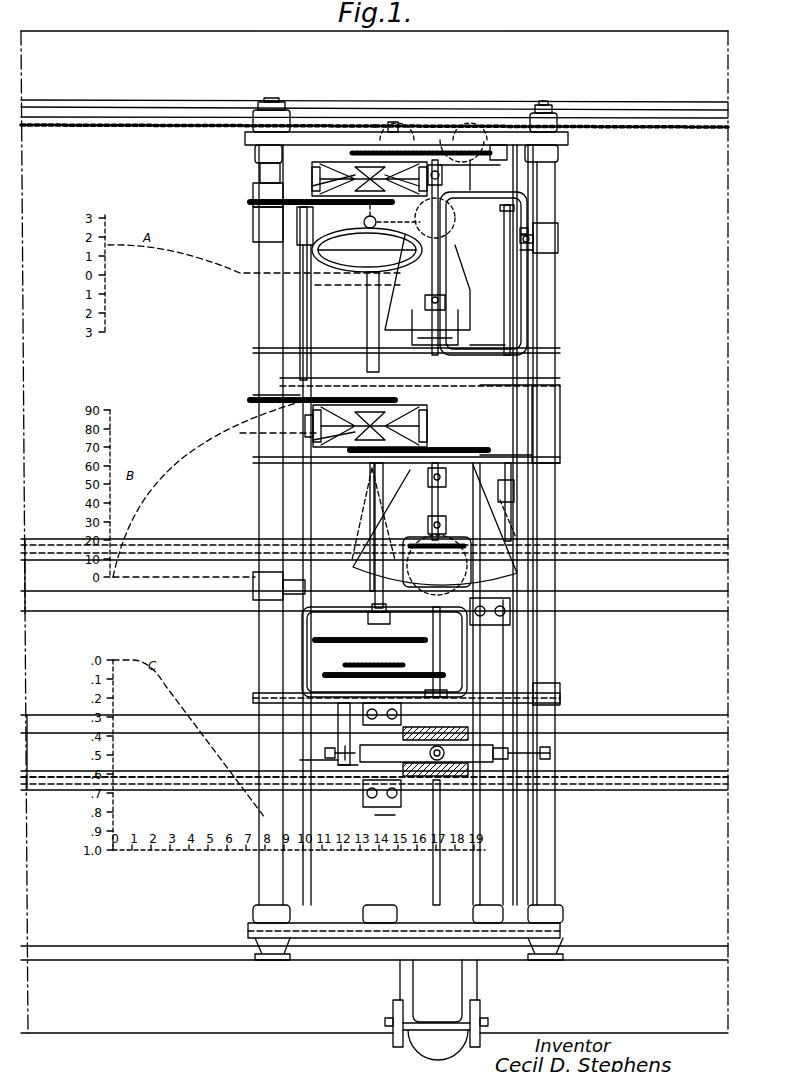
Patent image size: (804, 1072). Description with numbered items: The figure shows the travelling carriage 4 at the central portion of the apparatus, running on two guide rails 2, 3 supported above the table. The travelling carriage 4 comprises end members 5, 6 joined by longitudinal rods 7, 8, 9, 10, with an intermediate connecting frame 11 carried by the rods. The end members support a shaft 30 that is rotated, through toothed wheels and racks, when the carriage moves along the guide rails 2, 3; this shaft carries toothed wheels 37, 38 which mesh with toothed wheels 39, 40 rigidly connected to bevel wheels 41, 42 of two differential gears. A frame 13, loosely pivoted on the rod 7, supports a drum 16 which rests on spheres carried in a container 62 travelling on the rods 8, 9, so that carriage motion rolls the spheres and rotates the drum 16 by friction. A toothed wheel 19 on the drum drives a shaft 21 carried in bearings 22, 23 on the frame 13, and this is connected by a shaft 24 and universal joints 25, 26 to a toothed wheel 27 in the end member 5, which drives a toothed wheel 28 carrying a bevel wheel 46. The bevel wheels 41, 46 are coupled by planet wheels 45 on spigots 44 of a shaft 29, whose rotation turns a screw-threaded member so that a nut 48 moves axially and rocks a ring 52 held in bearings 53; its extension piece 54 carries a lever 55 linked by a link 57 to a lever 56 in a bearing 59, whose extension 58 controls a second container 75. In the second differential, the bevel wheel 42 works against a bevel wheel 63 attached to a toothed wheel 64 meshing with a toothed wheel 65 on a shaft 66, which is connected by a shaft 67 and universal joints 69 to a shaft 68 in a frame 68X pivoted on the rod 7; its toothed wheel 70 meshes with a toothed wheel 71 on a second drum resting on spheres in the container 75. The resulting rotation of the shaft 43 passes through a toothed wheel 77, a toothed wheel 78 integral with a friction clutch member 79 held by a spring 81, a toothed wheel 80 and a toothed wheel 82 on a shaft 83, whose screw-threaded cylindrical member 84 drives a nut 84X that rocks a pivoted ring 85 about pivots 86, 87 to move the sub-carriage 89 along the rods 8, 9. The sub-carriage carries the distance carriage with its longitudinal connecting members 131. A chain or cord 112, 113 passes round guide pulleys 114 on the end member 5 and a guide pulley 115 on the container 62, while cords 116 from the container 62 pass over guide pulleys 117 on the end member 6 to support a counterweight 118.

The guide rail 2 is at (645, 119).
The guide rail 3 is at (681, 951).
The travelling carriage 4 is at (392, 132).
The end member 5 is at (520, 135).
The end member 6 is at (325, 928).
The longitudinal rod 7 is at (268, 874).
The longitudinal rod 8 is at (380, 818).
The longitudinal rod 9 is at (520, 883).
The longitudinal rod 10 is at (546, 871).
The intermediate connecting frame 11 is at (548, 432).
The frame 13 is at (470, 195).
The drum 16 is at (445, 250).
The toothed wheel 19 is at (468, 300).
The shaft 21 is at (548, 396).
The bearing 22 is at (445, 340).
The bearing 23 is at (450, 338).
The shaft 24 is at (440, 268).
The universal joint 25 is at (475, 167).
The universal joint 26 is at (458, 322).
The toothed wheel 27 is at (483, 140).
The toothed wheel 28 is at (358, 164).
The shaft 29 is at (368, 282).
The shaft 30 is at (303, 300).
The toothed wheel 37 is at (256, 202).
The toothed wheel 38 is at (290, 400).
The toothed wheel 39 is at (337, 232).
The toothed wheel 40 is at (380, 402).
The bevel wheel 41 is at (268, 145).
The bevel wheel 42 is at (313, 423).
The shaft 43 is at (370, 480).
The spigot 44 is at (332, 186).
The planet wheel 45 is at (270, 110).
The bevel wheel 46 is at (348, 175).
The nut 48 is at (345, 247).
The ring 52 is at (330, 225).
The bearing 53 is at (290, 230).
The extension piece 54 is at (522, 256).
The lever 55 is at (545, 252).
The lever 56 is at (516, 482).
The link 57 is at (486, 347).
The extension 58 is at (512, 517).
The bearing 59 is at (513, 492).
The container 62 is at (510, 232).
The bevel wheel 63 is at (330, 440).
The toothed wheel 64 is at (352, 455).
The toothed wheel 65 is at (441, 468).
The shaft 66 is at (520, 470).
The shaft 67 is at (432, 495).
The shaft 68 is at (480, 598).
The frame 68X is at (302, 622).
The universal joint 69 is at (446, 490).
The toothed wheel 70 is at (470, 585).
The toothed wheel 71 is at (437, 562).
The container 75 is at (445, 615).
The toothed wheel 77 is at (360, 642).
The toothed wheel 78 is at (372, 677).
The friction clutch member 79 is at (325, 748).
The toothed wheel 80 is at (340, 712).
The spring 81 is at (375, 615).
The toothed wheel 82 is at (548, 698).
The shaft 83 is at (430, 665).
The cylindrical member 84 is at (470, 735).
The nut 84X is at (470, 772).
The pivoted ring 85 is at (452, 752).
The pivot 86 is at (300, 762).
The pivot 87 is at (550, 753).
The sub-carriage 89 is at (442, 800).
The chain or cord 112 is at (188, 128).
The chain or cord 113 is at (683, 129).
The guide pulley 114 is at (443, 140).
The guide pulley 115 is at (530, 226).
The cord or chain 116 is at (552, 953).
The guide pulley 117 is at (390, 1005).
The counterweight 118 is at (430, 1053).
The longitudinal connecting member 131 is at (198, 786).